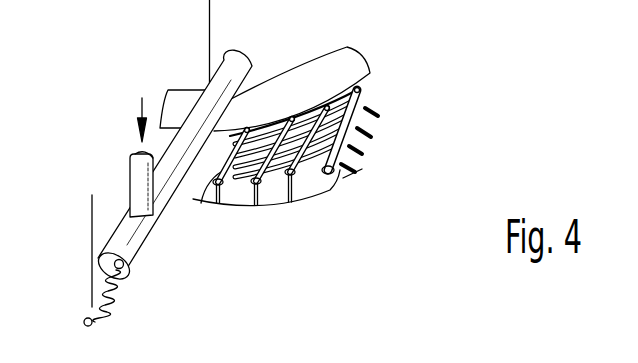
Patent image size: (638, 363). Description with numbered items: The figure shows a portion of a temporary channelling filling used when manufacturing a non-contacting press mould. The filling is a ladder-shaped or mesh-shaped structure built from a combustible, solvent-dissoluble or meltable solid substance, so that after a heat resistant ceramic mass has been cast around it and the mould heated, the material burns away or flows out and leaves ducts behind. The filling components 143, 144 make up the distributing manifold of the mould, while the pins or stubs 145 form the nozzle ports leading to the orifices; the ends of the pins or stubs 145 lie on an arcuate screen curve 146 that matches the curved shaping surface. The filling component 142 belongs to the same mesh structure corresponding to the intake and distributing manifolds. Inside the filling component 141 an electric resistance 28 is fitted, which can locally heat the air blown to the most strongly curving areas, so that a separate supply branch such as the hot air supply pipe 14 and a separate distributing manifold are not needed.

The hot air supply pipe 14 is at (135, 187).
The electric resistance 28 is at (118, 292).
The filling component 141 is at (243, 53).
The filling component 142 is at (343, 72).
The filling component 143 is at (200, 203).
The filling component 144 is at (278, 190).
The pins or stubs 145 is at (326, 196).
The arcuate screen curve 146 is at (292, 207).